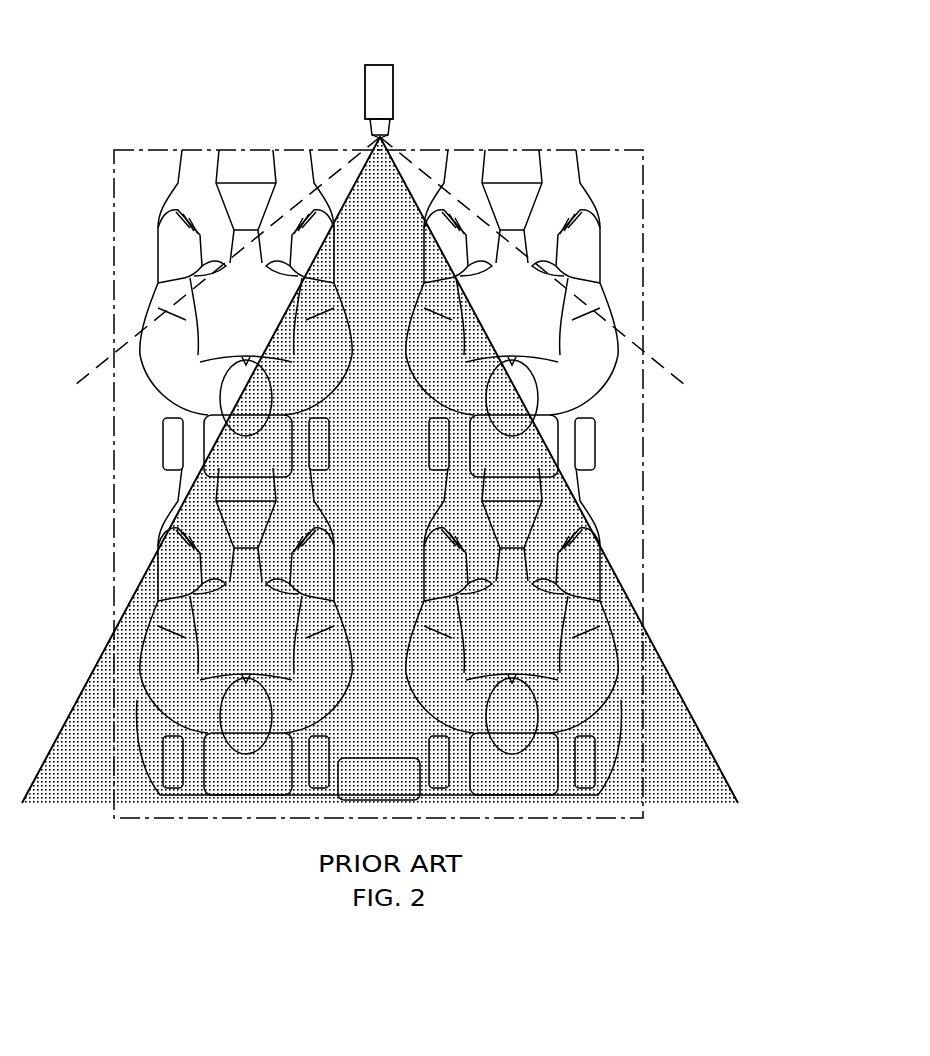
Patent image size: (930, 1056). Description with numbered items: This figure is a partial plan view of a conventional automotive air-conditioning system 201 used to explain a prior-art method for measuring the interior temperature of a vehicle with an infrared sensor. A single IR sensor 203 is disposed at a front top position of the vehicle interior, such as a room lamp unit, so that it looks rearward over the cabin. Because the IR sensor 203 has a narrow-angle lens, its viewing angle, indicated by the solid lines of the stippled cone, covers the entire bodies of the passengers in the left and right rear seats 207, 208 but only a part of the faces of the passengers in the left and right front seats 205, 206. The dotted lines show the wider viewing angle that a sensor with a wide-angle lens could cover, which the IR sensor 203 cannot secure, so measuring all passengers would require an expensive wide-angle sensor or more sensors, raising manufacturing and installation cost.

The conventional automotive air-conditioning system 201 is at (522, 93).
The IR sensor 203 is at (378, 80).
The left front seat 205 is at (248, 205).
The right front seat 206 is at (515, 195).
The left rear seat 207 is at (248, 522).
The right rear seat 208 is at (512, 520).